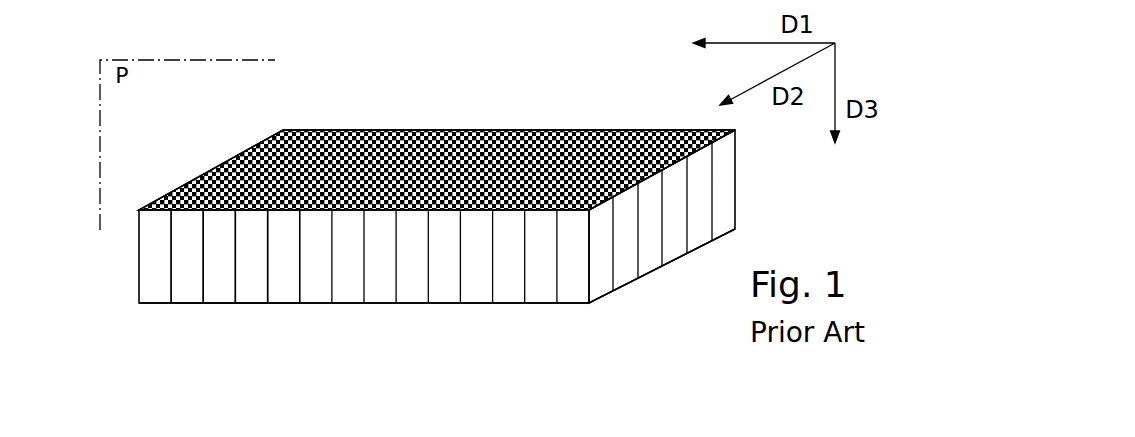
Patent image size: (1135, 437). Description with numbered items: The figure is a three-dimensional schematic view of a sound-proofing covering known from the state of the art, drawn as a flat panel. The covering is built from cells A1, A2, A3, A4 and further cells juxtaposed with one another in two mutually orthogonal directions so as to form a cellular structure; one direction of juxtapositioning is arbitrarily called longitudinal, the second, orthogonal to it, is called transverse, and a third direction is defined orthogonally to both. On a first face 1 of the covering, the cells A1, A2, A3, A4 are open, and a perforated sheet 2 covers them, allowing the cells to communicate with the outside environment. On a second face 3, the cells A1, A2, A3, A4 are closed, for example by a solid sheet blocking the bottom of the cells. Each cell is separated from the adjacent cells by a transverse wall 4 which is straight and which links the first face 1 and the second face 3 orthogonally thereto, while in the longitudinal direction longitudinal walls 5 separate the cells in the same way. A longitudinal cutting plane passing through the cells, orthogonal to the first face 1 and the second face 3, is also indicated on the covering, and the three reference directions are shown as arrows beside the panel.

The first face 1 is at (437, 219).
The perforated sheet 2 is at (447, 142).
The second face 3 is at (548, 315).
The transverse wall 4 is at (363, 267).
The longitudinal wall 5 is at (638, 250).
The cell A1 is at (190, 299).
The cell A2 is at (222, 298).
The cell A3 is at (260, 298).
The cell A4 is at (287, 298).